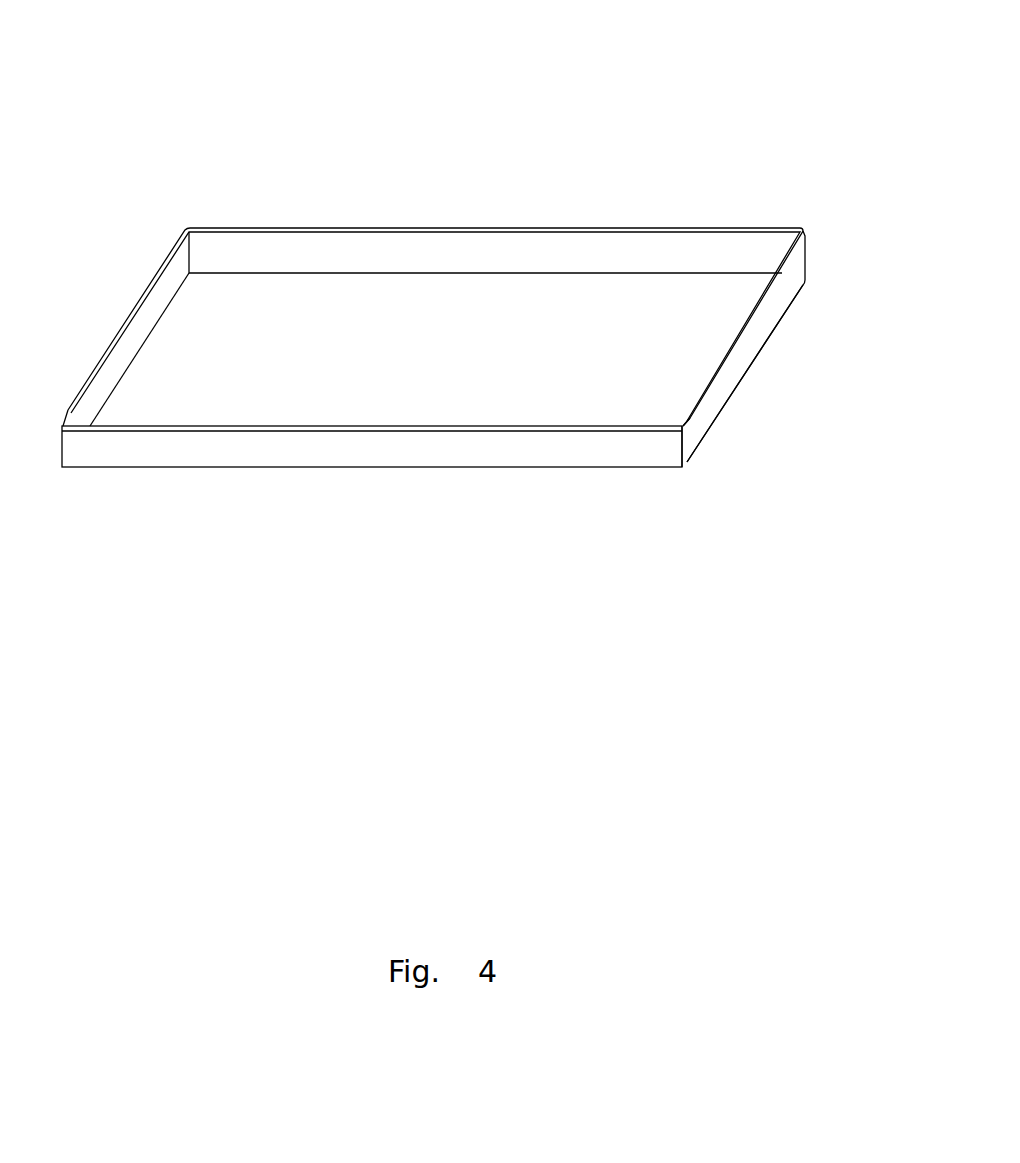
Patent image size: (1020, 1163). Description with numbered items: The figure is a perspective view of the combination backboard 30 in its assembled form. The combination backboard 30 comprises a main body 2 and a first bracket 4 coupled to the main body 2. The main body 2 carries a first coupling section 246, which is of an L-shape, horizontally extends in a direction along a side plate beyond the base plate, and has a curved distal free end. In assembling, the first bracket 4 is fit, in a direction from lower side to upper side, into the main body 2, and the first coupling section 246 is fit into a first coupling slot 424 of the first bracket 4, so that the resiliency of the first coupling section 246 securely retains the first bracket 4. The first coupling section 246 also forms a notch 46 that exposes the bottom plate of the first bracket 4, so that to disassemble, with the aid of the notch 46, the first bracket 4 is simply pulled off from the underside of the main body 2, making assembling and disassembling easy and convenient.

The combination backboard 30 is at (137, 172).
The main body 2 is at (480, 302).
The first bracket 4 is at (408, 442).
The first coupling slot 424 is at (683, 425).
The first coupling section 246 is at (687, 444).
The notch 46 is at (688, 458).